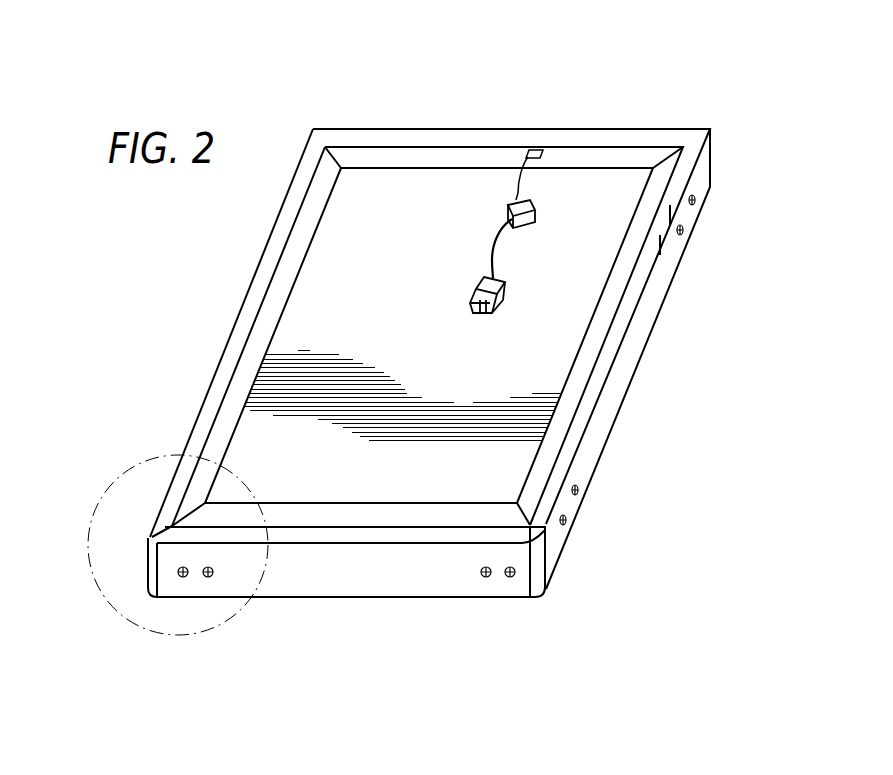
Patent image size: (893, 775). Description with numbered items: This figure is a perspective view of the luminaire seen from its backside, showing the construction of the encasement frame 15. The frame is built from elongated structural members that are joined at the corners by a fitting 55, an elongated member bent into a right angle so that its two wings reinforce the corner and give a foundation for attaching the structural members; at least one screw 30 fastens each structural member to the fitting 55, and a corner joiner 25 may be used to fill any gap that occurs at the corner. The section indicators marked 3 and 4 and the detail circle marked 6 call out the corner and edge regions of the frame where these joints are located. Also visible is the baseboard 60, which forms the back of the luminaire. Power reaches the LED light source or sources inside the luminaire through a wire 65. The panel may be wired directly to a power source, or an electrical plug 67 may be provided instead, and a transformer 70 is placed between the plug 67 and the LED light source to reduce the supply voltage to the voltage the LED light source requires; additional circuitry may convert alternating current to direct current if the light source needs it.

The section line 3- 3 is at (212, 336).
The section line 4- 4 is at (512, 112).
The detail circle 6 is at (117, 480).
The encasement frame 15 is at (360, 577).
The corner joiner 25 is at (538, 565).
The screw 30 is at (491, 575).
The fitting 55 is at (547, 502).
The baseboard 60 is at (624, 190).
The wire 65 is at (493, 253).
The electrical plug 67 is at (505, 292).
The transformer 70 is at (529, 202).